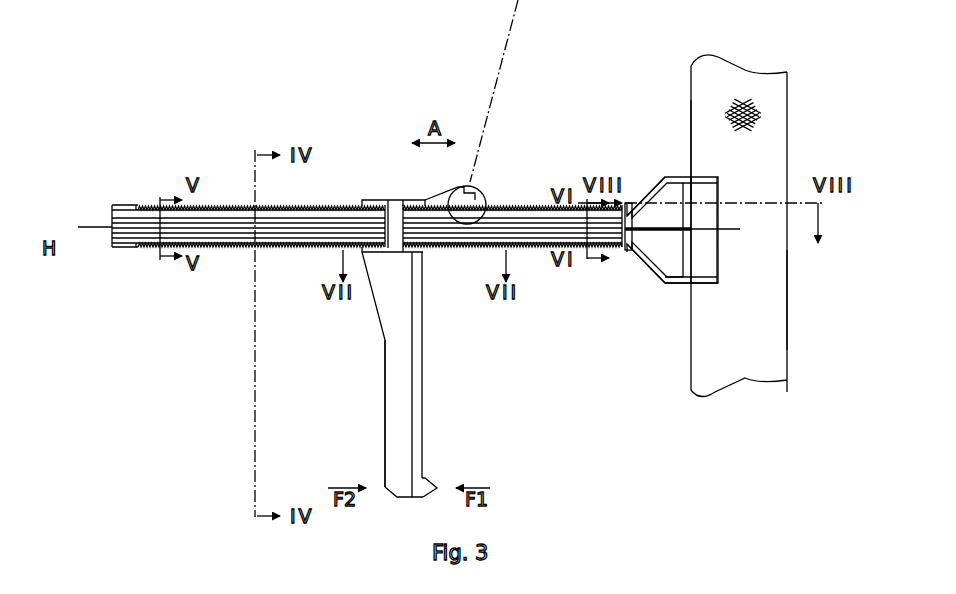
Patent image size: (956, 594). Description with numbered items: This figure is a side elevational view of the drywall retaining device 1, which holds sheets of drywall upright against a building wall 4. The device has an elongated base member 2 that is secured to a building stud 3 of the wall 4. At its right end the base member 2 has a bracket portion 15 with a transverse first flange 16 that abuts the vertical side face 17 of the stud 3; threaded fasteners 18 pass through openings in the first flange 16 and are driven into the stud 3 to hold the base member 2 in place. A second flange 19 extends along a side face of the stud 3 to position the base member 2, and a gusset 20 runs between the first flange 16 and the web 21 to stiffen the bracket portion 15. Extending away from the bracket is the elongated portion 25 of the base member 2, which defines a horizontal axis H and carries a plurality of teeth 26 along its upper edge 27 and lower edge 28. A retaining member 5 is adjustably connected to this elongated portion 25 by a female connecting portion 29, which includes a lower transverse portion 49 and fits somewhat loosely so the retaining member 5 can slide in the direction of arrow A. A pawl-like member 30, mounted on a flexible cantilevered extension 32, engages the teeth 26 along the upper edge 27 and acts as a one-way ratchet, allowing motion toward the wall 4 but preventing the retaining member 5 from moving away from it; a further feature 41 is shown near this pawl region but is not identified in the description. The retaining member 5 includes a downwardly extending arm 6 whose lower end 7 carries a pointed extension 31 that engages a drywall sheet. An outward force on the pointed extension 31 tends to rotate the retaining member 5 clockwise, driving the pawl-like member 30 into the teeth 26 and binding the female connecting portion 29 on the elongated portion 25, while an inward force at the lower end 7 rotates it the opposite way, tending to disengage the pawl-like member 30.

The drywall retaining device 1 is at (405, 143).
The base member 2 is at (358, 237).
The building stud 3 is at (742, 347).
The wall 4 is at (790, 300).
The retaining member 5 is at (384, 385).
The arm 6 is at (395, 432).
The lower end 7 is at (392, 484).
The bracket portion 15 is at (659, 185).
The first flange 16 is at (672, 280).
The vertical side face 17 is at (691, 66).
The threaded fasteners 18 is at (652, 250).
The second flange 19 is at (705, 197).
The gusset 20 is at (752, 112).
The web 21 is at (673, 190).
The elongated portion 25 is at (307, 205).
The teeth 26 is at (237, 205).
The upper edge 27 is at (144, 205).
The lower edge 28 is at (144, 247).
The female connecting portion 29 is at (423, 255).
The pawl-like member 30 is at (470, 203).
The pointed extension 31 is at (425, 478).
The cantilevered extension 32 is at (426, 200).
The locking tab 41 is at (458, 184).
The lower transverse portion 49 is at (373, 200).